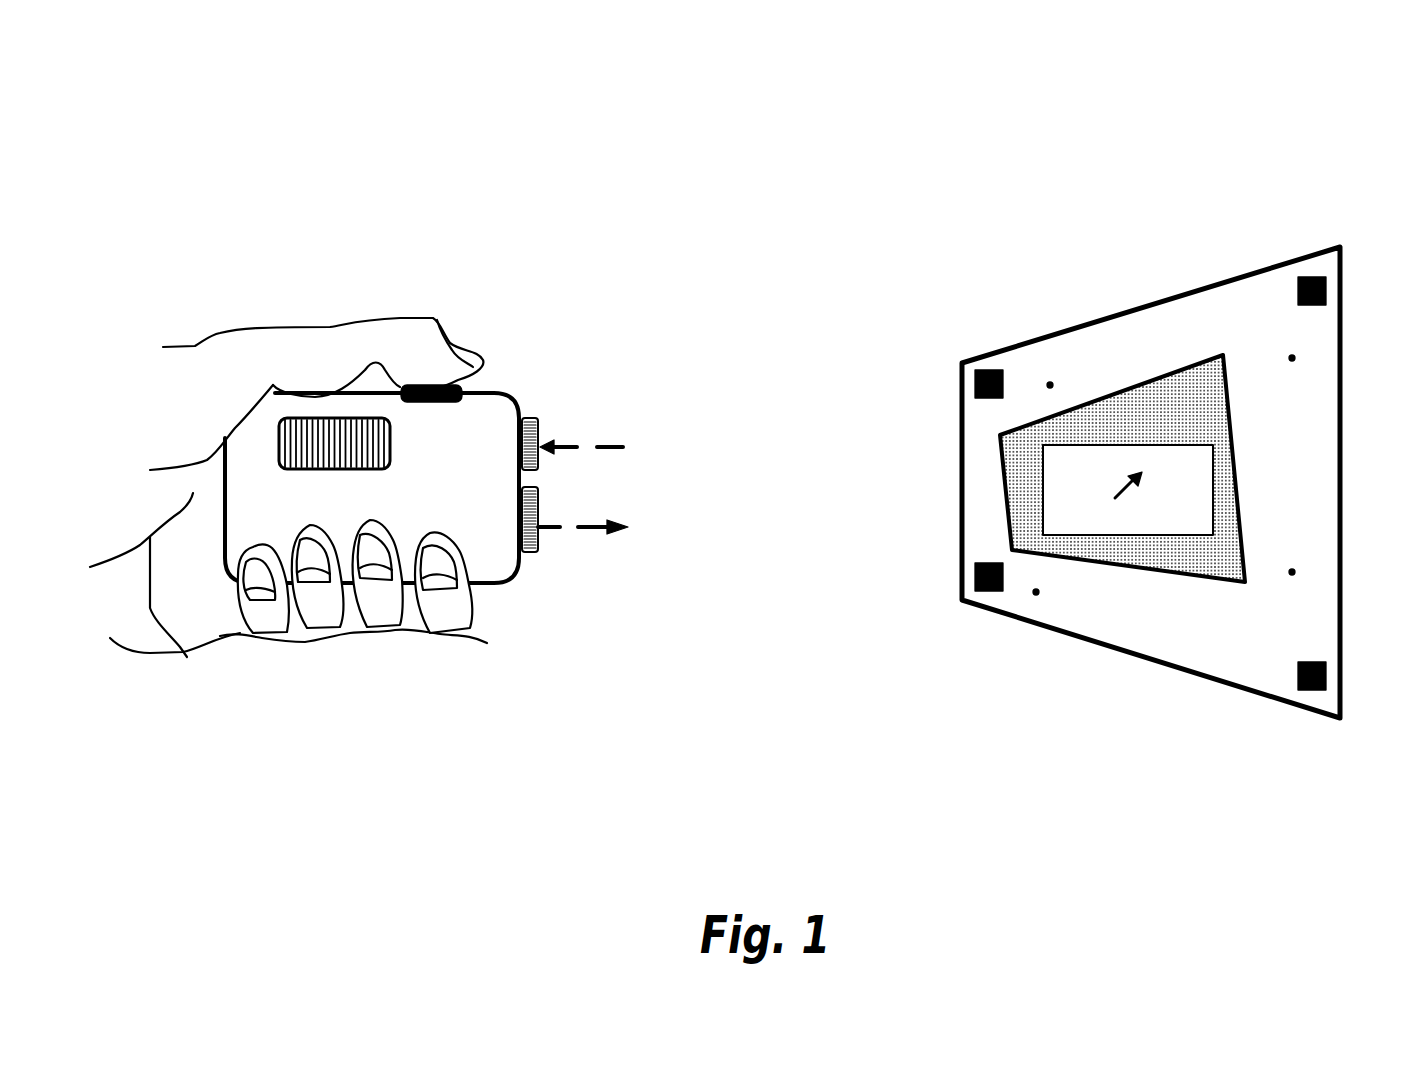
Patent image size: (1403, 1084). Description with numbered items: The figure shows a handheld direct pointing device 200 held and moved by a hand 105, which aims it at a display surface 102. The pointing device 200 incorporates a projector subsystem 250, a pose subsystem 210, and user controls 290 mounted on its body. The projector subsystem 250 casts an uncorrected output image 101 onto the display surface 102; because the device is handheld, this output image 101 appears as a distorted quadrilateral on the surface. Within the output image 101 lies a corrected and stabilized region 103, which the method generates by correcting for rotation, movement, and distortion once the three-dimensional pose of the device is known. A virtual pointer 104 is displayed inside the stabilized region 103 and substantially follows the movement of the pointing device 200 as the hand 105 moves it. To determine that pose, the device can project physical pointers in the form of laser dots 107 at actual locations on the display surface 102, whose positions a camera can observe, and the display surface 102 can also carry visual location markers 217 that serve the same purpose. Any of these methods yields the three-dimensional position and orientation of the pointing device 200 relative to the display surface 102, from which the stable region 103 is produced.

The uncorrected output image 101 is at (1003, 512).
The display surface 102 is at (1153, 303).
The corrected and stabilized region 103 is at (1165, 537).
The virtual pointer 104 is at (1128, 465).
The hand 105 is at (267, 327).
The laser dots 107 is at (1288, 350).
The handheld direct pointing device 200 is at (507, 583).
The pose subsystem 210 is at (533, 418).
The visual location markers 217 is at (988, 370).
The projector subsystem 250 is at (535, 550).
The user controls 290 is at (462, 387).